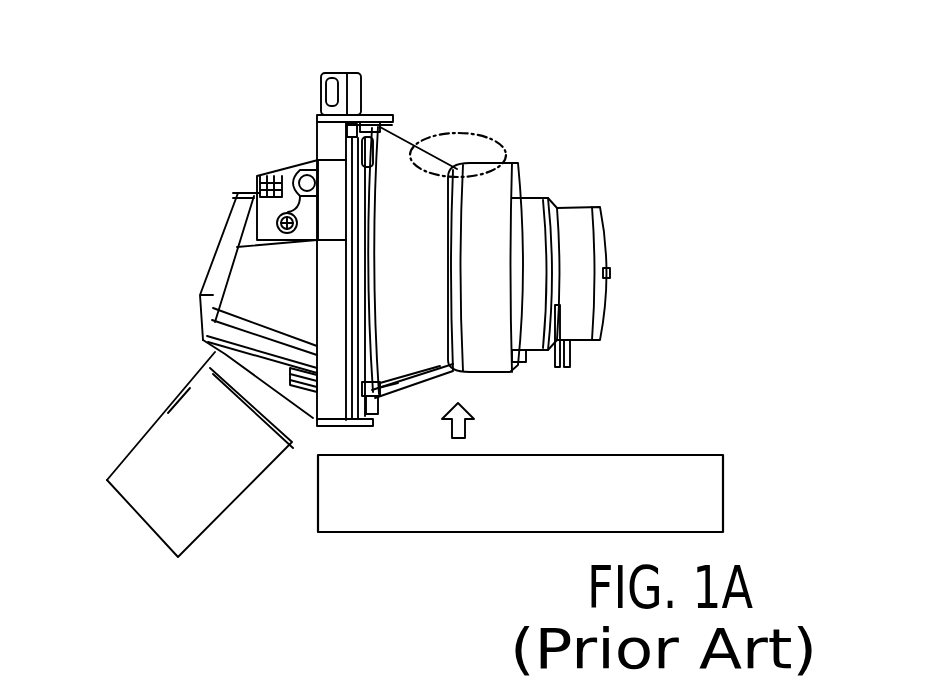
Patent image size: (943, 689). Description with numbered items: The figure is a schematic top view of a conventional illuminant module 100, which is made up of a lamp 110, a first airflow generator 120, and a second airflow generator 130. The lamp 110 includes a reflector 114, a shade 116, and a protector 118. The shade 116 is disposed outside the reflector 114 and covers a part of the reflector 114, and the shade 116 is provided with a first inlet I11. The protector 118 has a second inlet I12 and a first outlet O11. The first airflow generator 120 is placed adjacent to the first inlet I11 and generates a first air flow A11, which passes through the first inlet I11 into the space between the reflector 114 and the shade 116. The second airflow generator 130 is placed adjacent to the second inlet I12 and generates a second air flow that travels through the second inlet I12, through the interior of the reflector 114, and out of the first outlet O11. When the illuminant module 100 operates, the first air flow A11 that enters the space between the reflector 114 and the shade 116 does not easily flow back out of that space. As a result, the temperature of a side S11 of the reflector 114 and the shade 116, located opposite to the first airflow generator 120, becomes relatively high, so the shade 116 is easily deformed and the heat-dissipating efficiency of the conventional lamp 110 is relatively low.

The illuminant module 100 is at (753, 381).
The lamp 110 is at (556, 116).
The reflector 114 is at (426, 374).
The shade 116 is at (492, 150).
The protector 118 is at (243, 277).
The first airflow generator 120 is at (713, 497).
The second airflow generator 130 is at (128, 471).
The first outlet O11 is at (268, 166).
The side S11 is at (432, 136).
The first air flow A11 is at (466, 430).
The first inlet I11 is at (415, 385).
The second inlet I12 is at (238, 397).